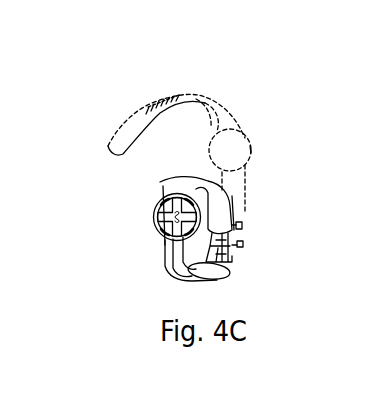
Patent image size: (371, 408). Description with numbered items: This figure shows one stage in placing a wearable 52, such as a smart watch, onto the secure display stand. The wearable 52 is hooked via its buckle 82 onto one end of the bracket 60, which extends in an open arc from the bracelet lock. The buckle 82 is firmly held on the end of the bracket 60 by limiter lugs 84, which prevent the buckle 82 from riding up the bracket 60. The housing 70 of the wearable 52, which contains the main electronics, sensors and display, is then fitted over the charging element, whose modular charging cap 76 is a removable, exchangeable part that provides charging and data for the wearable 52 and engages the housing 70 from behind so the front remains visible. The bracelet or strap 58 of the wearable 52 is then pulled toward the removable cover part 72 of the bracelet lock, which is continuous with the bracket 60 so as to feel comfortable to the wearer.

The wearable 52 is at (193, 88).
The bracelet or strap 58 is at (142, 108).
The bracket 60 is at (167, 180).
The housing 70 is at (237, 150).
The removable cover part 72 is at (221, 278).
The modular charging cap 76 is at (157, 220).
The buckle 82 is at (241, 250).
The limiter lugs 84 is at (233, 210).